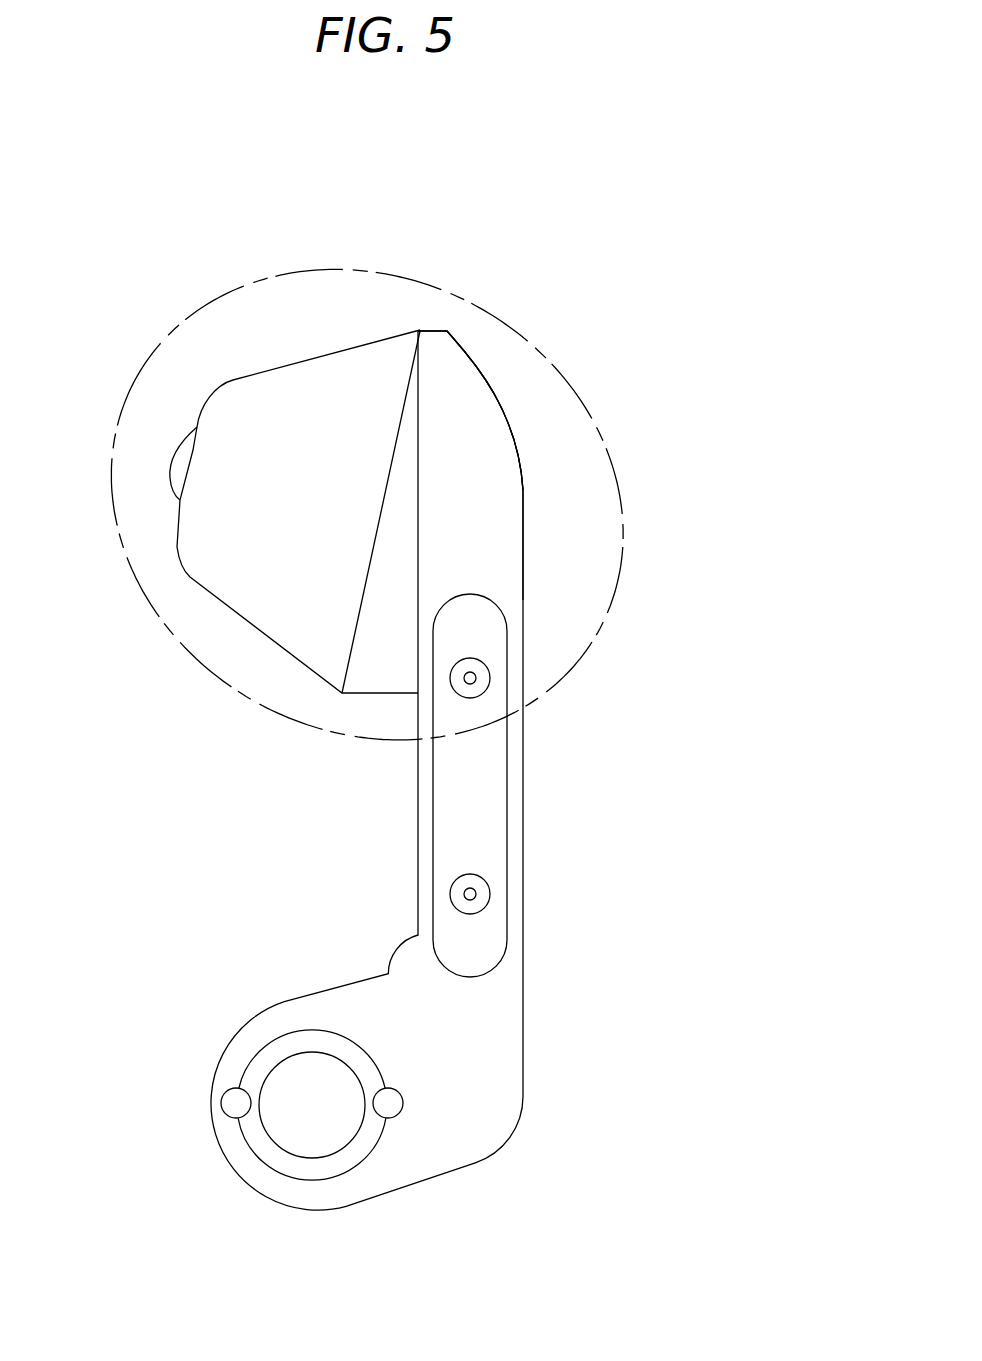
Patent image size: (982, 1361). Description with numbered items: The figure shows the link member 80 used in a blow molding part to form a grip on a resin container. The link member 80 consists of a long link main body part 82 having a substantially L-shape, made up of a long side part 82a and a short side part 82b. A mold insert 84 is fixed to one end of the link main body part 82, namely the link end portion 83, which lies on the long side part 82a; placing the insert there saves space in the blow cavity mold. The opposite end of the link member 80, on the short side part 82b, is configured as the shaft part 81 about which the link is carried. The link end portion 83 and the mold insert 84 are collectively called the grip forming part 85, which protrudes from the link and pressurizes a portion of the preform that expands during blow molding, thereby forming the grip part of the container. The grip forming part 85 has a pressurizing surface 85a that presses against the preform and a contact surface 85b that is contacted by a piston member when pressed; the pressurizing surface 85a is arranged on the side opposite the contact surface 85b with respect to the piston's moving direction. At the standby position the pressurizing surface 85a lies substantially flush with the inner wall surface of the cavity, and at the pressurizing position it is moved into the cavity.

The link member 80 is at (566, 236).
The shaft part 81 is at (318, 1132).
The link main body part 82 is at (488, 815).
The long side part 82a is at (518, 747).
The short side part 82b is at (388, 1007).
The link end portion 83 is at (457, 433).
The mold insert 84 is at (292, 388).
The grip forming part 85 is at (578, 393).
The pressurizing surface 85a is at (197, 427).
The contact surface 85b is at (517, 440).